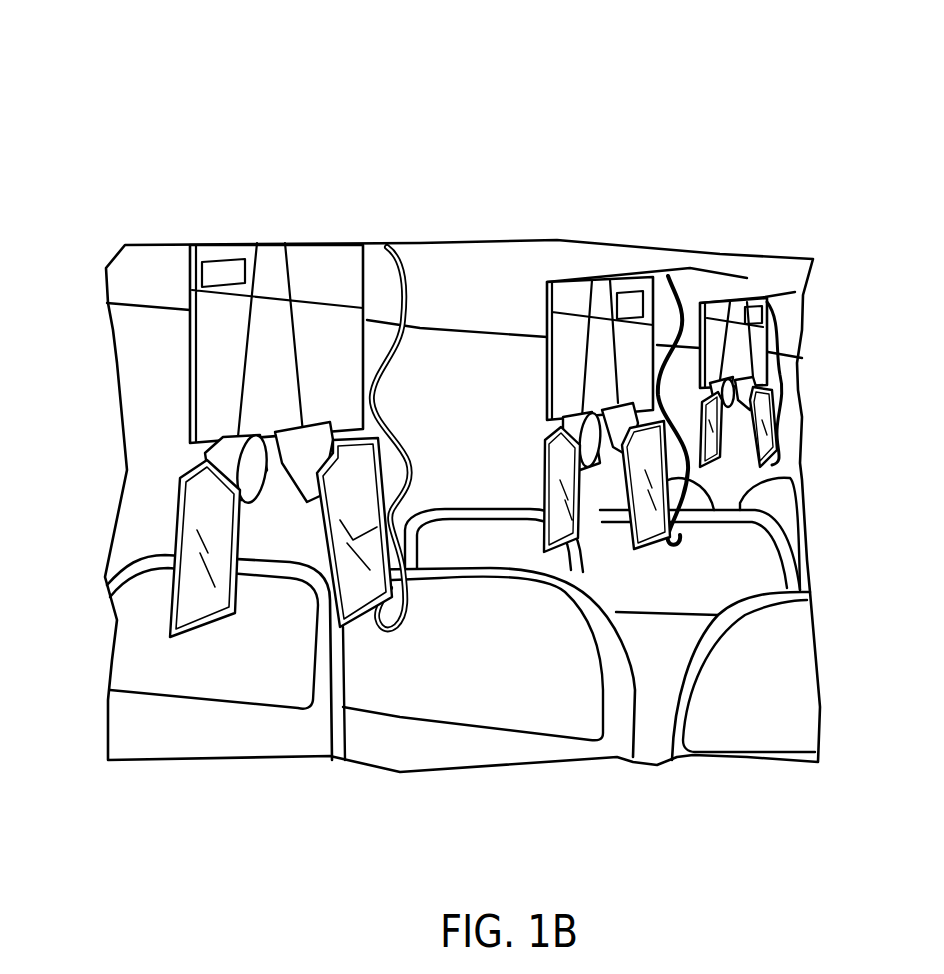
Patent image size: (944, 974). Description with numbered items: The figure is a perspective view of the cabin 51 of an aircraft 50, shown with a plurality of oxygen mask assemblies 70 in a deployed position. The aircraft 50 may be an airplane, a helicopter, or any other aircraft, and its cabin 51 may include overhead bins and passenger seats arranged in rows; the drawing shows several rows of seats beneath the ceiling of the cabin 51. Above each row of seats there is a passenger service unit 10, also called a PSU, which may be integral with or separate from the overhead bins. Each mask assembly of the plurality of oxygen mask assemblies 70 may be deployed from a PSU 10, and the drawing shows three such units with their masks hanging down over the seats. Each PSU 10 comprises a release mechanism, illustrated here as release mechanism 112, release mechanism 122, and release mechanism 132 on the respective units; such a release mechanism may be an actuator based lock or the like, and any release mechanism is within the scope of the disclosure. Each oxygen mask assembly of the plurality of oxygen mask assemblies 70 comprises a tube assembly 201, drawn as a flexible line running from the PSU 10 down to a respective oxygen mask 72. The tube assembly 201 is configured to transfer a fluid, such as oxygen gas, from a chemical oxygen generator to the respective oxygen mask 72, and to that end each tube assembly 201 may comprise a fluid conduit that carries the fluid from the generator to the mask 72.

The aircraft 50 is at (462, 389).
The cabin 51 is at (475, 408).
The plurality of oxygen mask assemblies 70 is at (162, 361).
The oxygen mask 72 is at (400, 513).
The passenger service unit 10 is at (479, 283).
The release mechanism 112 is at (207, 272).
The release mechanism 122 is at (628, 303).
The release mechanism 132 is at (742, 303).
The tube assembly 201 is at (407, 245).